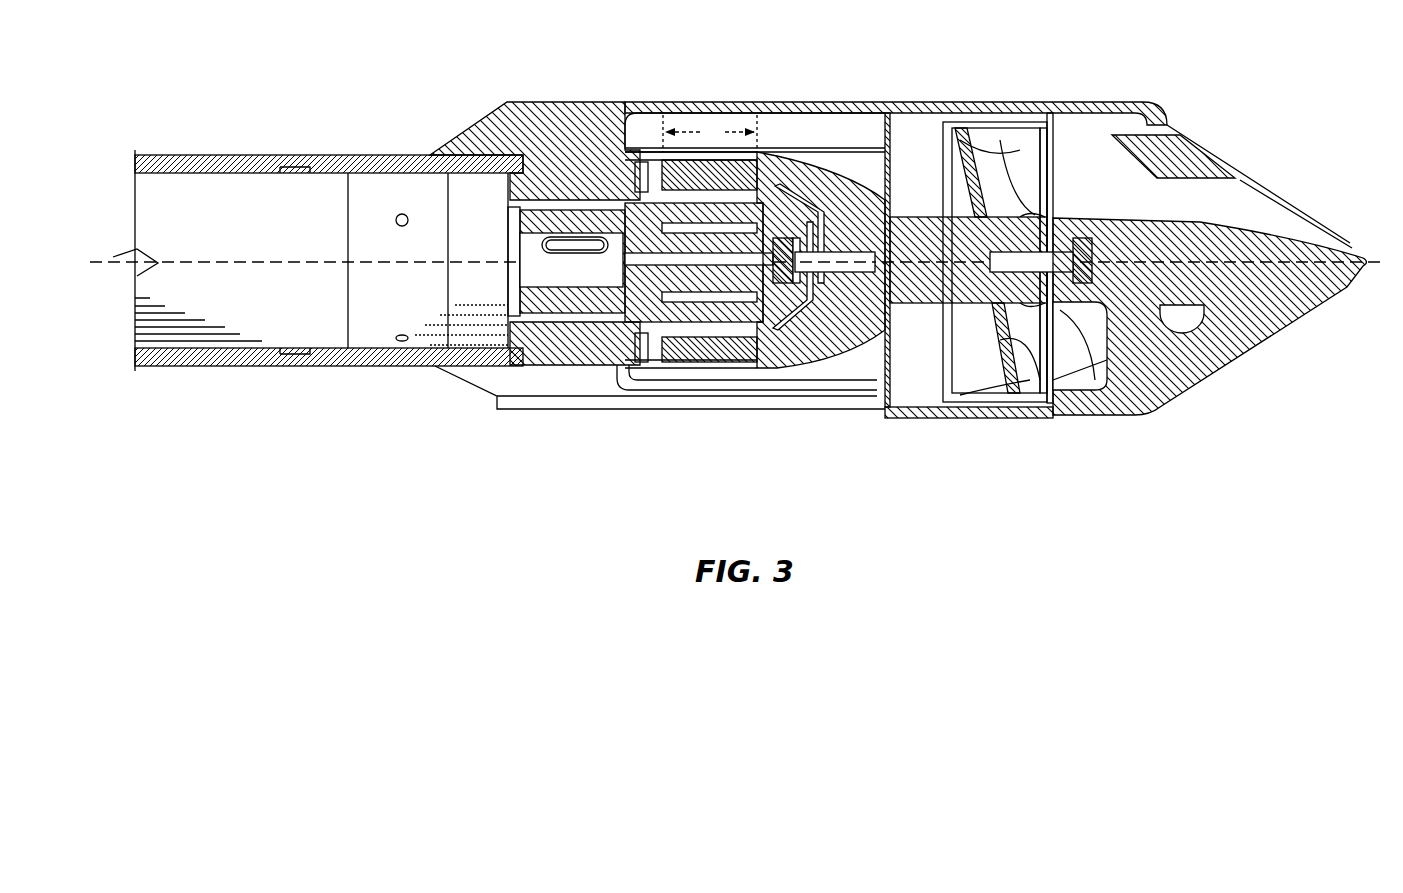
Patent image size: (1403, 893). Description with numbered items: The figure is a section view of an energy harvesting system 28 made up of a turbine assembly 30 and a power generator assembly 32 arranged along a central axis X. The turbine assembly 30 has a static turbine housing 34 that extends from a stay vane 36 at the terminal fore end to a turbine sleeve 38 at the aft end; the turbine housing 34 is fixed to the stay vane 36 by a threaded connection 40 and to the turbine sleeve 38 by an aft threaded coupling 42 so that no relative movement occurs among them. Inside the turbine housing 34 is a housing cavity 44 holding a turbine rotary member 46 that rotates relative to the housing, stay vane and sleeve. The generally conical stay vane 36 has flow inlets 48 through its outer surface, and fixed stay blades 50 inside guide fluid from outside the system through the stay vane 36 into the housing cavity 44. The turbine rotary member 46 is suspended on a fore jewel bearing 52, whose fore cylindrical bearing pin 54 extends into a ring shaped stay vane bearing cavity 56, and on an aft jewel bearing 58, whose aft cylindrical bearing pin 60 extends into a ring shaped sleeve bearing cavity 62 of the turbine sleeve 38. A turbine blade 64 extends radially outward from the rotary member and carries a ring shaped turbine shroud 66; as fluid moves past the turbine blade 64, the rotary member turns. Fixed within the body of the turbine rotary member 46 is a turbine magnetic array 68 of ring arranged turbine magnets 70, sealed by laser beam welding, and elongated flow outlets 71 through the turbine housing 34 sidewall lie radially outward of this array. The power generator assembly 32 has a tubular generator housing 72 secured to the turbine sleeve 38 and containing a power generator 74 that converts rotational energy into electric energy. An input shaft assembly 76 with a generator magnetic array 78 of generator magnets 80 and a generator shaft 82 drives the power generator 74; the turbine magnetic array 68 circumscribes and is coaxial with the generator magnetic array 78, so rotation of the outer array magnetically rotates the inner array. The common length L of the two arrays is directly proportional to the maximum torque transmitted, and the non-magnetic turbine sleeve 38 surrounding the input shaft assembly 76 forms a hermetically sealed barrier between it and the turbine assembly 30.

The energy harvesting system 28 is at (723, 432).
The turbine assembly 30 is at (1065, 72).
The power generator assembly 32 is at (252, 110).
The turbine housing 34 is at (688, 102).
The stay vane 36 is at (1255, 185).
The turbine sleeve 38 is at (370, 157).
The threaded connection 40 is at (1090, 110).
The aft threaded coupling 42 is at (553, 177).
The housing cavity 44 is at (932, 351).
The turbine rotary member 46 is at (885, 200).
The flow inlets 48 is at (1195, 160).
The stay blades 50 is at (1093, 330).
The fore jewel bearing 52 is at (1036, 288).
The fore cylindrical bearing pin 54 is at (1030, 265).
The stay vane bearing cavity 56 is at (1067, 293).
The aft jewel bearing 58 is at (853, 285).
The aft cylindrical bearing pin 60 is at (830, 268).
The sleeve bearing cavity 62 is at (797, 285).
The turbine blade 64 is at (965, 170).
The turbine shroud 66 is at (985, 128).
The turbine magnetic array 68 is at (754, 380).
The turbine magnets 70 is at (720, 340).
The flow outlets 71 is at (793, 123).
The generator housing 72 is at (207, 368).
The power generator 74 is at (313, 308).
The input shaft assembly 76 is at (600, 182).
The generator magnetic array 78 is at (677, 322).
The generator magnets 80 is at (710, 310).
The generator shaft 82 is at (572, 280).
The central axis X is at (214, 262).
The length L is at (710, 133).